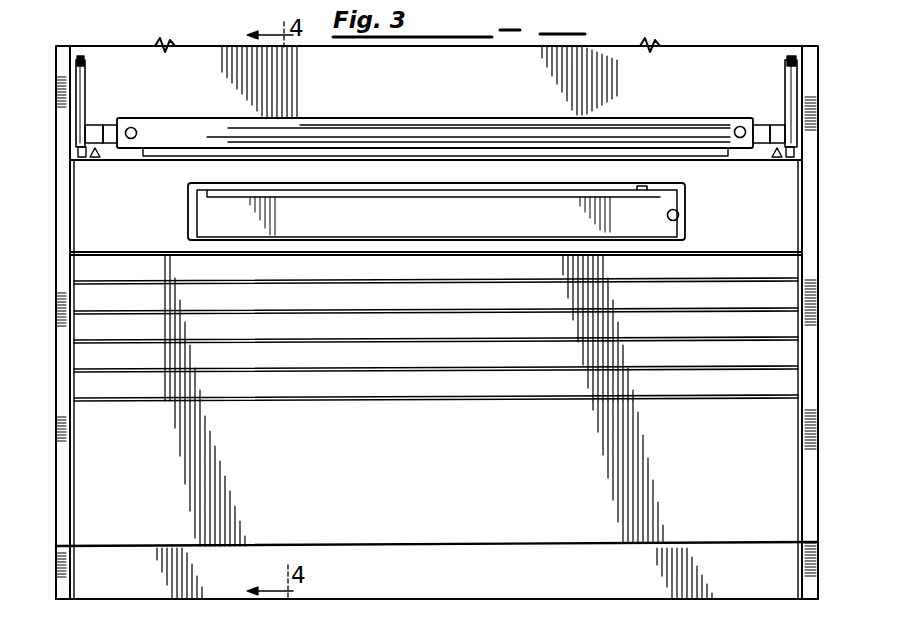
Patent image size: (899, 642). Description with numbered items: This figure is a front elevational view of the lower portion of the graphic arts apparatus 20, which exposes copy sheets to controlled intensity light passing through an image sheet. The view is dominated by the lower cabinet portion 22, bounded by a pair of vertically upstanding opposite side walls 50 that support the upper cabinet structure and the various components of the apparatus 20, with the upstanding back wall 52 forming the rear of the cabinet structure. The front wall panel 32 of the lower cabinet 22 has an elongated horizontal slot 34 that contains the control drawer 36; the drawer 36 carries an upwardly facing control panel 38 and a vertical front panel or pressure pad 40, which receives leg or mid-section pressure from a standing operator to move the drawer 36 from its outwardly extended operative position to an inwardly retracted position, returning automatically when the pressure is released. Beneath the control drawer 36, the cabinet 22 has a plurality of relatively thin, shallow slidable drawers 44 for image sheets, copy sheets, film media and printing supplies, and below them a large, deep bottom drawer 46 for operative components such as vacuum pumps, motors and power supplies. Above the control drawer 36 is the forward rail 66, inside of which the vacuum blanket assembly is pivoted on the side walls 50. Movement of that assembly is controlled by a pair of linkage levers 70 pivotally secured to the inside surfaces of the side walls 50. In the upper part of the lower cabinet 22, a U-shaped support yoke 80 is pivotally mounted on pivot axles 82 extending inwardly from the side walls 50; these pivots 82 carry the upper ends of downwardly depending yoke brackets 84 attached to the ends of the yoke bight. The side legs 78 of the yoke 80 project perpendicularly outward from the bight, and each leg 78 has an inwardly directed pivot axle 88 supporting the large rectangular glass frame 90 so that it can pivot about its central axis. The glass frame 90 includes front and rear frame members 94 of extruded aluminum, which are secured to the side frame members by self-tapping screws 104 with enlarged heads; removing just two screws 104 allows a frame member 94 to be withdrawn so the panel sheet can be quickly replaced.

The graphic arts apparatus 20 is at (870, 533).
The lower cabinet portion 22 is at (56, 348).
The front wall panel 32 is at (140, 215).
The elongated horizontal slot 34 is at (680, 215).
The control drawer 36 is at (646, 188).
The control panel 38 is at (478, 190).
The pressure pad 40 is at (385, 228).
The slidable drawers 44 is at (516, 262).
The bottom drawer 46 is at (445, 481).
The side walls 50 is at (66, 215).
The back wall 52 is at (430, 98).
The forward rail 66 is at (412, 183).
The linkage levers 70 is at (78, 152).
The side legs 78 is at (92, 125).
The support yoke 80 is at (637, 114).
The pivot axles 82 is at (76, 62).
The yoke brackets 84 is at (78, 90).
The pivot axle 88 is at (110, 125).
The glass frame 90 is at (337, 119).
The front and rear frame members 94 is at (432, 124).
The self-tapping screws 104 is at (138, 130).